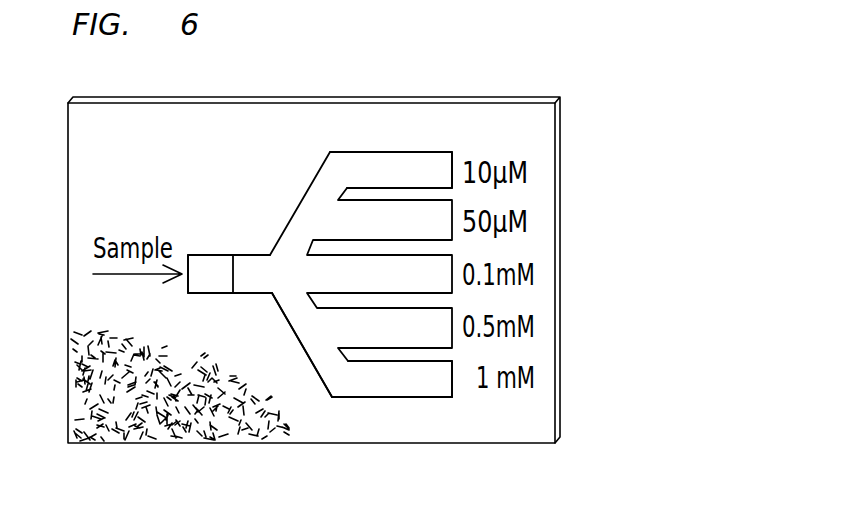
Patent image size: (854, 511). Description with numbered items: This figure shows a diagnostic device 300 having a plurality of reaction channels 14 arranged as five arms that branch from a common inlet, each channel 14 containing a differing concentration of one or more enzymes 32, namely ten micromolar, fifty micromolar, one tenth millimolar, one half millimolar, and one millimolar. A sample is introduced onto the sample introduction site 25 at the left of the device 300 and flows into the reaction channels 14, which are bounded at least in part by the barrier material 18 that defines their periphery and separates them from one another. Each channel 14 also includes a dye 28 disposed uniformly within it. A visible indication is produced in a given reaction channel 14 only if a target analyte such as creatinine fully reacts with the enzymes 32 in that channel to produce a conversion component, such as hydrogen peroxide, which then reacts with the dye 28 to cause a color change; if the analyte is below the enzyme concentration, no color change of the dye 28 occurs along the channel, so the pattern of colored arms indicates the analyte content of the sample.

The device 300 is at (613, 117).
The dye 28 is at (357, 170).
The enzymes 32 is at (417, 170).
The sample introduction site 25 is at (208, 277).
The reaction channel 14 is at (417, 382).
The barrier material 18 is at (358, 397).